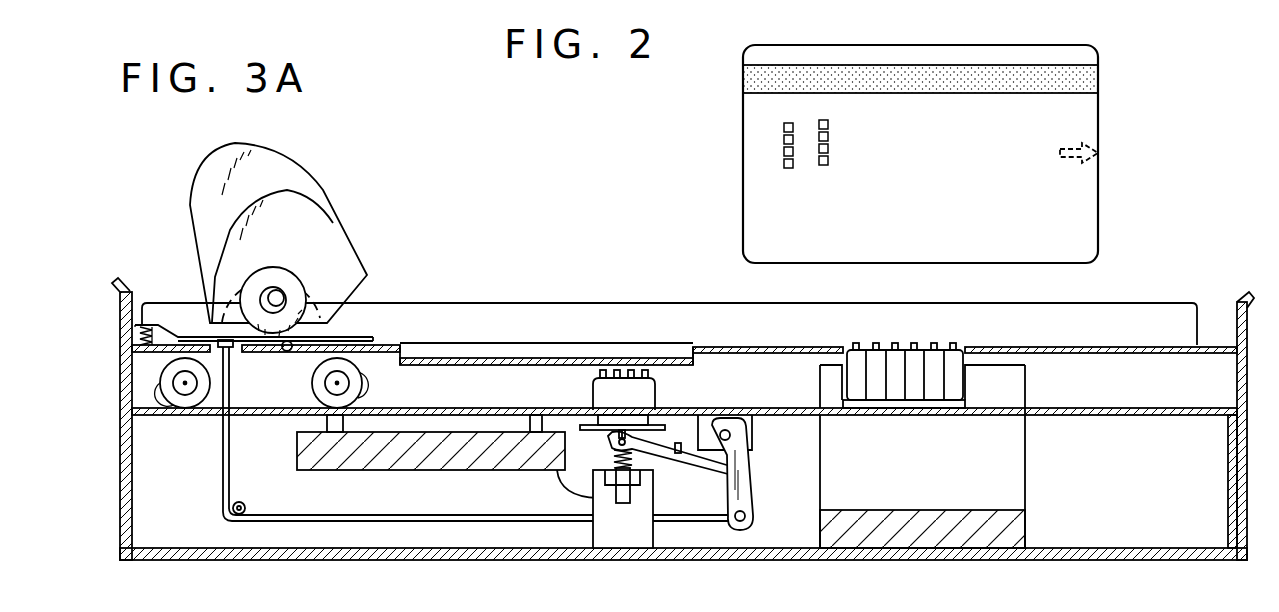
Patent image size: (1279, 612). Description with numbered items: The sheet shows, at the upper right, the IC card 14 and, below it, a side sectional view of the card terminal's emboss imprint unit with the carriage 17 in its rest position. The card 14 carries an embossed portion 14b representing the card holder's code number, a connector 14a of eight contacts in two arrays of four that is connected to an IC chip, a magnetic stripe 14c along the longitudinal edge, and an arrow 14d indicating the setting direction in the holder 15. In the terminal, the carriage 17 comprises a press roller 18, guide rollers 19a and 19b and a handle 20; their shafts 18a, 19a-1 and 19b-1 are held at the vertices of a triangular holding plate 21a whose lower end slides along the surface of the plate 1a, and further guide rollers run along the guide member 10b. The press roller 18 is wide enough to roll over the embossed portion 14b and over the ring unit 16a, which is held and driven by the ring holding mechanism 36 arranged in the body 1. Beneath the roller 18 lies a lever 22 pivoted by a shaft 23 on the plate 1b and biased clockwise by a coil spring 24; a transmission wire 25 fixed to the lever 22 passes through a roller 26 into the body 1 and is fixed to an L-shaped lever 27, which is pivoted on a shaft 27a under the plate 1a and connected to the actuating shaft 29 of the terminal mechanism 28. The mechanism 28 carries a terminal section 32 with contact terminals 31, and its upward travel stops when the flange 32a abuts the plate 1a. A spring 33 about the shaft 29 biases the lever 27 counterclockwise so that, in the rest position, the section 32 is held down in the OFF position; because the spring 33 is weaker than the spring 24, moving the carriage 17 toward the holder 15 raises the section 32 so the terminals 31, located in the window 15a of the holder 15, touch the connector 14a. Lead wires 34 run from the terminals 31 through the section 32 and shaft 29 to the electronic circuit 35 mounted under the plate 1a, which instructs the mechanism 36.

In FIG. 3A, the body 1 is at (1248, 482).
In FIG. 3A, the plate 1a is at (265, 418).
In FIG. 3A, the plate 1b is at (405, 356).
In FIG. 3A, the guide member 10b is at (768, 322).
In FIG. 3A, the holder 15 is at (490, 358).
In FIG. 3A, the window 15a is at (633, 345).
In FIG. 3A, the unit 16a is at (902, 350).
In FIG. 3A, the carriage 17 is at (323, 187).
In FIG. 3A, the press roller 18 is at (305, 288).
In FIG. 3A, the shaft 18a is at (278, 300).
In FIG. 3A, the guide roller 19a is at (160, 383).
In FIG. 3A, the shaft 19a-1 is at (185, 385).
In FIG. 3A, the guide roller 19b is at (362, 383).
In FIG. 3A, the shaft 19b-1 is at (337, 385).
In FIG. 3A, the handle 20 is at (196, 188).
In FIG. 3A, the holding plate 21a is at (215, 300).
In FIG. 3A, the lever 22 is at (373, 337).
In FIG. 3A, the shaft 23 is at (287, 351).
In FIG. 3A, the coil spring 24 is at (138, 329).
In FIG. 3A, the transmission wire 25 is at (223, 500).
In FIG. 3A, the roller 26 is at (245, 505).
In FIG. 3A, the L-shaped lever 27 is at (745, 480).
In FIG. 3A, the shaft 27a is at (731, 436).
In FIG. 3A, the terminal mechanism 28 is at (635, 470).
In FIG. 3A, the actuating shaft 29 is at (660, 450).
In FIG. 3A, the contact terminals 31 is at (648, 373).
In FIG. 3A, the terminal section 32 is at (593, 390).
In FIG. 3A, the flange 32a is at (617, 437).
In FIG. 3A, the spring 33 is at (613, 458).
In FIG. 3A, the lead wires 34 is at (560, 490).
In FIG. 3A, the electronic circuit 35 is at (447, 470).
In FIG. 3A, the ring holding mechanism 36 is at (1025, 480).
In FIG. 2, the IC card 14 is at (1028, 45).
In FIG. 2, the connector 14a is at (803, 155).
In FIG. 2, the embossed portion 14b is at (1050, 222).
In FIG. 2, the magnetic stripe 14c is at (1098, 78).
In FIG. 2, the arrow 14d is at (1098, 150).